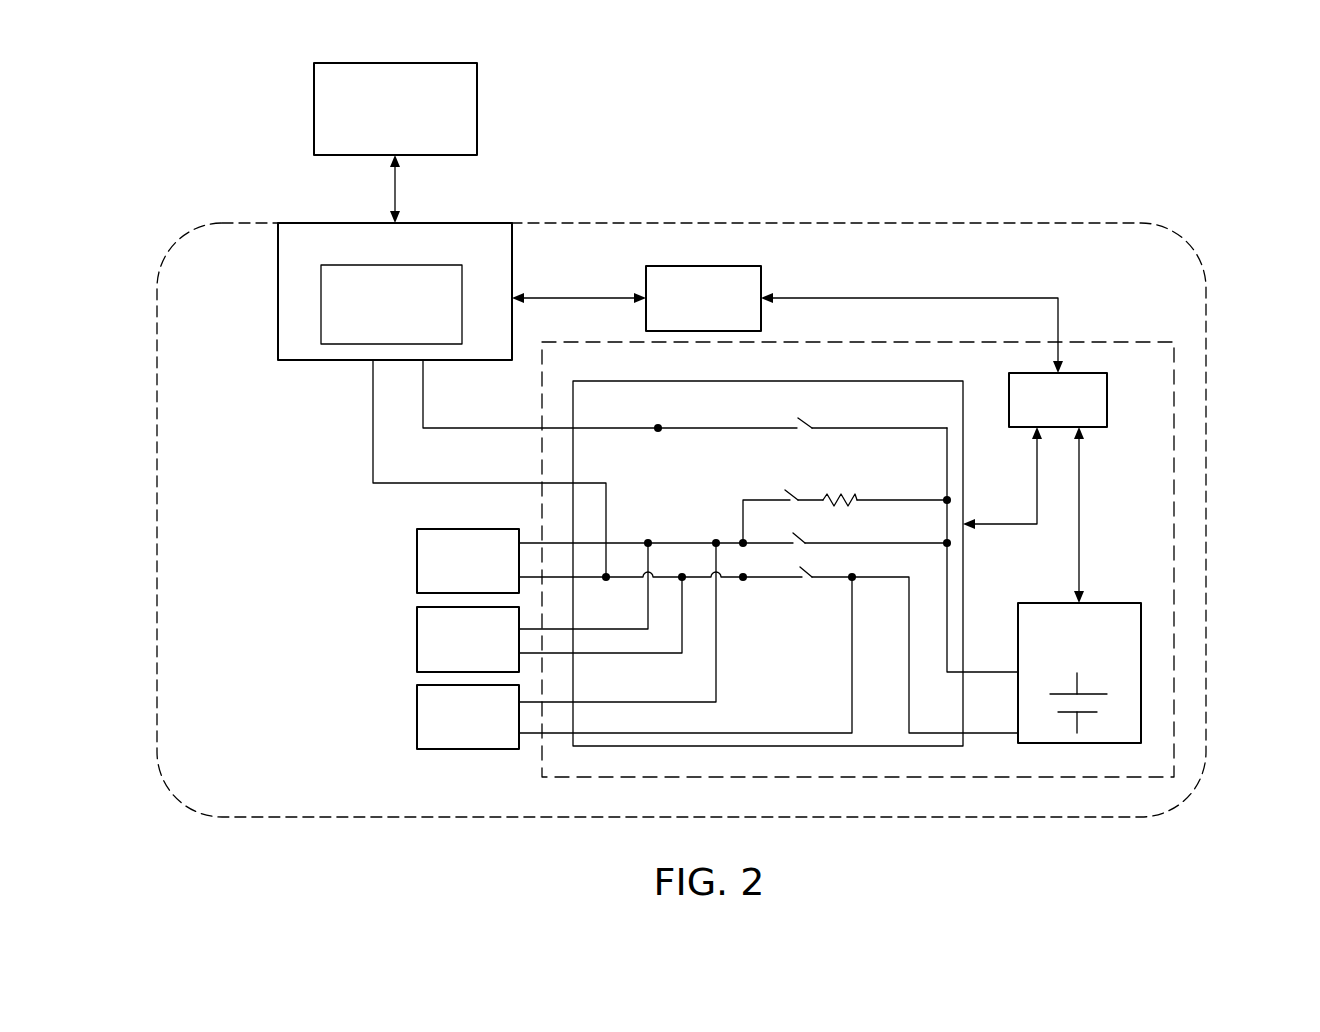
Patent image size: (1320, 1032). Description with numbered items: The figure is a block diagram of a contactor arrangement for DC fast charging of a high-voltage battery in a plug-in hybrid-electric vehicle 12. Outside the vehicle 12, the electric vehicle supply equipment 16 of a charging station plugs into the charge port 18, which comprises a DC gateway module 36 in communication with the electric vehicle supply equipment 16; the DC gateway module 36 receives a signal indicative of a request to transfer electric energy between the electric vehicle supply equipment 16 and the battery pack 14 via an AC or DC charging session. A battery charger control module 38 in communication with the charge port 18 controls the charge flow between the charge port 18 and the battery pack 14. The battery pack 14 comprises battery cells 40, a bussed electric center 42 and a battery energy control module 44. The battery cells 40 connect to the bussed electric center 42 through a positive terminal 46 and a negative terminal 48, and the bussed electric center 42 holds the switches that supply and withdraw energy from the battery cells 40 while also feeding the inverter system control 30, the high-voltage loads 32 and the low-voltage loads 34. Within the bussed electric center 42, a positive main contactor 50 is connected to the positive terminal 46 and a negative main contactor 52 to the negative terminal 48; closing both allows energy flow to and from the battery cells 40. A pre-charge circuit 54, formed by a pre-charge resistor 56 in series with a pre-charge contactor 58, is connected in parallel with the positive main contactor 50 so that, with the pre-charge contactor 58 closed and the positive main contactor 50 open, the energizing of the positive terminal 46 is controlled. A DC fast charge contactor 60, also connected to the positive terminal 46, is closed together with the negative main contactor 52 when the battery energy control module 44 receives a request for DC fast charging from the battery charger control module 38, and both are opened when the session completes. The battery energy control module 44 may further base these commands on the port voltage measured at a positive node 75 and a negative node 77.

The vehicle 12 is at (835, 223).
The battery pack 14 is at (835, 342).
The electric vehicle supply equipment 16 is at (314, 106).
The charge port 18 is at (278, 298).
The inverter system control 30 is at (417, 561).
The high-voltage loads 32 is at (417, 639).
The low-voltage loads 34 is at (417, 717).
The DC gateway module 36 is at (321, 307).
The battery charger control module 38 is at (646, 275).
The battery cells 40 is at (1094, 672).
The bussed electric center 42 is at (648, 381).
The battery energy control module 44 is at (1107, 412).
The positive terminal 46 is at (1097, 694).
The negative terminal 48 is at (1090, 712).
The positive main contactor 50 is at (806, 538).
The negative main contactor 52 is at (812, 572).
The pre-charge circuit 54 is at (791, 470).
The pre-charge resistor 56 is at (858, 498).
The pre-charge contactor 58 is at (793, 497).
The DC fast charge contactor 60 is at (810, 420).
The positive node 75 is at (658, 428).
The negative node 77 is at (743, 577).